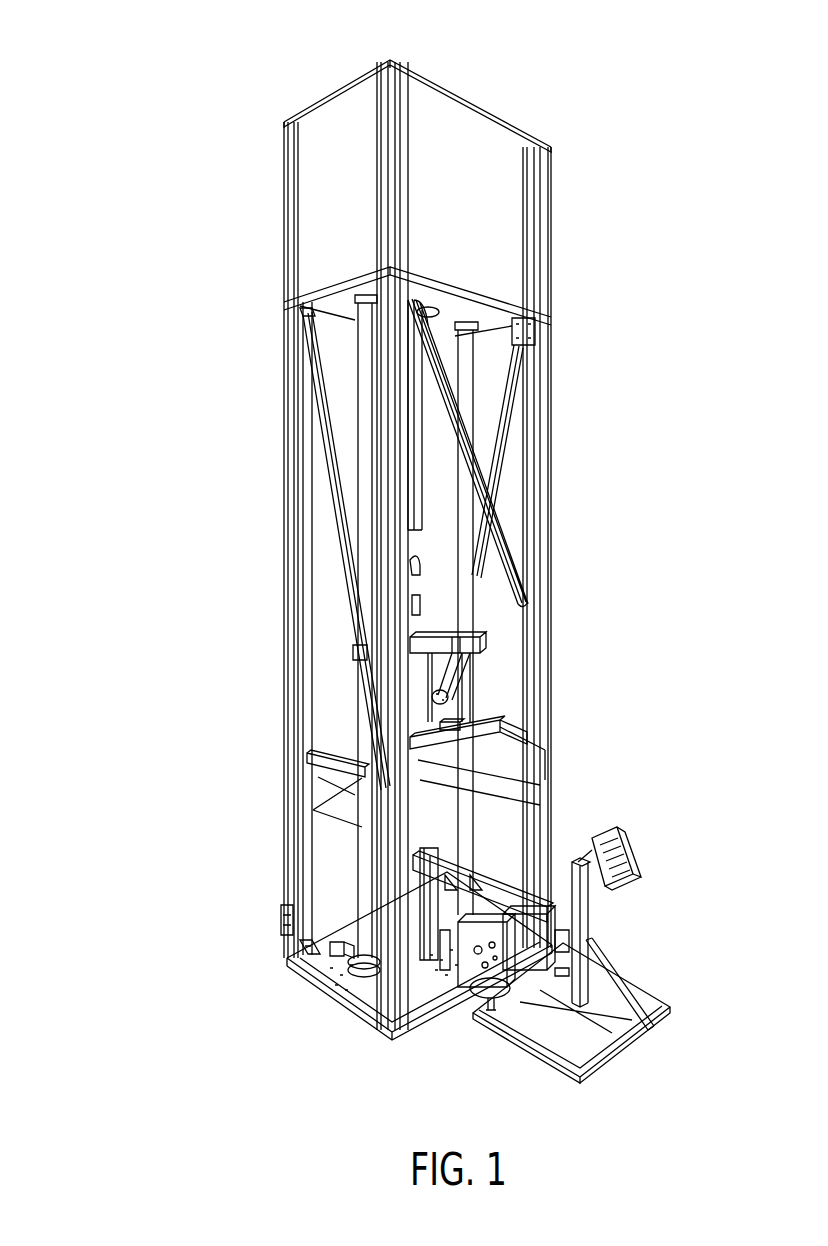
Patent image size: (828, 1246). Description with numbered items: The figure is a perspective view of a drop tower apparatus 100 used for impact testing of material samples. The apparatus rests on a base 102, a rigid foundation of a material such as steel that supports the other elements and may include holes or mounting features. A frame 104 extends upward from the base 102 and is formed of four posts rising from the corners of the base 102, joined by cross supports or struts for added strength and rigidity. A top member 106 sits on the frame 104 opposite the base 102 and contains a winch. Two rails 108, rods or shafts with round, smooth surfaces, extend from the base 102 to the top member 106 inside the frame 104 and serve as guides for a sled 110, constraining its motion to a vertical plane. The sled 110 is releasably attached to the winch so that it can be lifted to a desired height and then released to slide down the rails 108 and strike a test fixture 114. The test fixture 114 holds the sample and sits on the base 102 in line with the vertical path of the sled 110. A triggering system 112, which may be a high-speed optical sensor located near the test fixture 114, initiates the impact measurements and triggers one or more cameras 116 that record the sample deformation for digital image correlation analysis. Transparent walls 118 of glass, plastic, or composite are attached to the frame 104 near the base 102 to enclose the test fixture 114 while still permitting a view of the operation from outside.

The drop tower apparatus 100 is at (130, 80).
The base 102 is at (335, 1003).
The frame 104 is at (543, 430).
The top member 106 is at (325, 198).
The rails 108 is at (473, 672).
The sled 110 is at (437, 648).
The triggering system 112 is at (513, 880).
The test fixture 114 is at (407, 880).
The cameras 116 is at (580, 937).
The transparent walls 118 is at (490, 807).